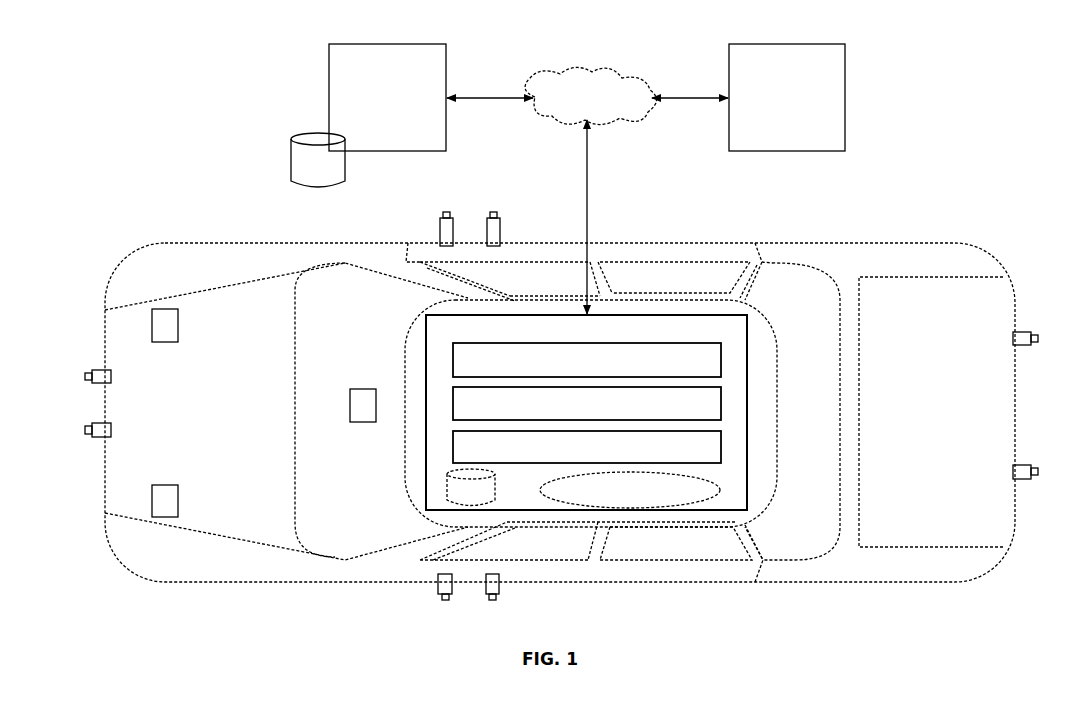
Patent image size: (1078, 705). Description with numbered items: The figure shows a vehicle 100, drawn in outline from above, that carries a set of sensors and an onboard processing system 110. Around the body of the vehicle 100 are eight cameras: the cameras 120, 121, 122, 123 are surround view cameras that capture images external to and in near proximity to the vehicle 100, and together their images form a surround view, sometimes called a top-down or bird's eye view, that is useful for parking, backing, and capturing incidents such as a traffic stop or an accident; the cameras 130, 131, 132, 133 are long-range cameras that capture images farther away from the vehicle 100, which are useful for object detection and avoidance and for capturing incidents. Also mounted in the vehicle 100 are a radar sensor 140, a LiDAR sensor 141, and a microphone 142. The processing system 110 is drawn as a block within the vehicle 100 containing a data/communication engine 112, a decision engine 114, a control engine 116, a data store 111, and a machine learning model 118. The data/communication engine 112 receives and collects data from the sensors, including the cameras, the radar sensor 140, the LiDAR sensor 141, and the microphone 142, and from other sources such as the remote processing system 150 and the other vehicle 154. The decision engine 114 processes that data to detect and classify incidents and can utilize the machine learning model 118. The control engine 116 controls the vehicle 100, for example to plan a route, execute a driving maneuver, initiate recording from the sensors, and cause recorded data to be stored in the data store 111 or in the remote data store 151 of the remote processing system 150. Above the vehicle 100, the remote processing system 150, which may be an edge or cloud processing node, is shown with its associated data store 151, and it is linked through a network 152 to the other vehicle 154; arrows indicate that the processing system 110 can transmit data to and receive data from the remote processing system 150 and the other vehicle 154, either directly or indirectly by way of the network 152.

The vehicle 100 is at (212, 243).
The processing system 110 is at (424, 335).
The data store 111 is at (458, 502).
The data/communication engine 112 is at (688, 344).
The decision engine 114 is at (676, 417).
The control engine 116 is at (676, 461).
The machine learning model 118 is at (666, 500).
The camera 120 is at (98, 369).
The camera 121 is at (444, 602).
The camera 122 is at (445, 212).
The camera 123 is at (1025, 331).
The camera 130 is at (98, 440).
The camera 131 is at (491, 602).
The camera 132 is at (492, 212).
The camera 133 is at (1022, 481).
The radar sensor 140 is at (165, 343).
The LiDAR sensor 141 is at (165, 484).
The microphone 142 is at (362, 388).
The remote processing system 150 is at (375, 44).
The remote data store 151 is at (304, 180).
The network 152 is at (552, 76).
The other vehicle 154 is at (775, 44).